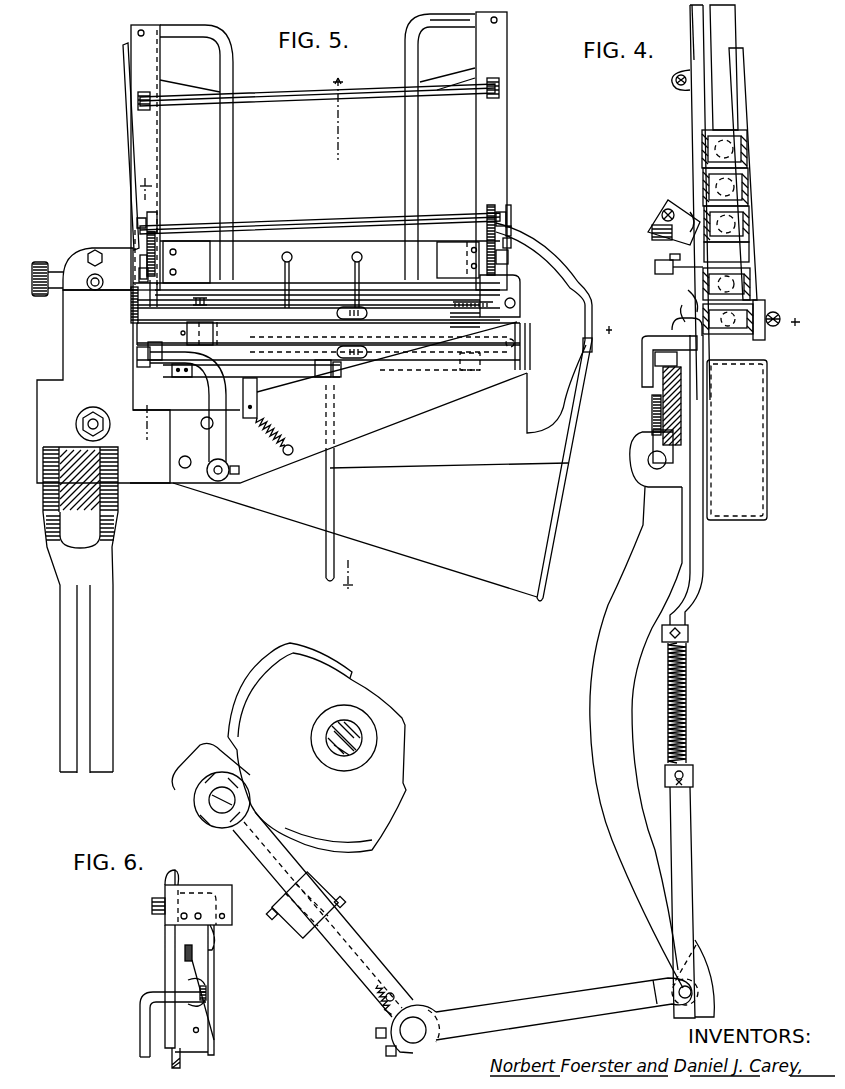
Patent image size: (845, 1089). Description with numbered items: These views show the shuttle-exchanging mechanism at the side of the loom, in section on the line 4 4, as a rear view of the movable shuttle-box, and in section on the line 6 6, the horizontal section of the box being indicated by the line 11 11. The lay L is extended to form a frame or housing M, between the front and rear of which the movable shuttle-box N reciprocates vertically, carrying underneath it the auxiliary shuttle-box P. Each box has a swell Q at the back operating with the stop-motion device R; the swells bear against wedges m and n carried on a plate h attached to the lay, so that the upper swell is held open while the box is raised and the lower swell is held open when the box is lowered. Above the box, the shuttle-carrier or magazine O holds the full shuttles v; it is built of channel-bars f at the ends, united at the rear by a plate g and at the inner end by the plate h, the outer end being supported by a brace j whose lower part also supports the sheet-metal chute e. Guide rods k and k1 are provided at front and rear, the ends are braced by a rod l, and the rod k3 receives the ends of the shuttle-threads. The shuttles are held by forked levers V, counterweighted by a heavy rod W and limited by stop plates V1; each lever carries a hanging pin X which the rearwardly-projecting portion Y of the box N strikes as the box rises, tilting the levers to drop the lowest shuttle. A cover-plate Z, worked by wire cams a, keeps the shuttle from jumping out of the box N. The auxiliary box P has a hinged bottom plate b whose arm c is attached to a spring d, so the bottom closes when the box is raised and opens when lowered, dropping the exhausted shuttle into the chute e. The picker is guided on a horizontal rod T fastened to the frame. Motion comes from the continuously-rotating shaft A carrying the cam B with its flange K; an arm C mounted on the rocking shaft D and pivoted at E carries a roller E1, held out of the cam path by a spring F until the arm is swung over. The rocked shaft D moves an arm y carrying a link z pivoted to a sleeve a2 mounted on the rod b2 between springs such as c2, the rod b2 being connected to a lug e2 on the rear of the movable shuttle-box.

In FIG. 5, the channel-bars f is at (319, 151).
In FIG. 4, the channel-bars f is at (705, 202).
In FIG. 5, the guide rod k is at (405, 131).
In FIG. 4, the guide rod k is at (742, 118).
In FIG. 5, the guide rod k1 is at (410, 70).
In FIG. 4, the guide rod k1 is at (690, 32).
In FIG. 5, the rod k3 is at (128, 76).
In FIG. 5, the rod l is at (318, 103).
In FIG. 4, the rod l is at (672, 82).
In FIG. 5, the shuttle-carrier O is at (330, 193).
In FIG. 4, the shuttle-carrier O is at (723, 67).
In FIG. 5, the section line 4 4 is at (342, 330).
In FIG. 5, the section line 6 6 is at (145, 317).
In FIG. 4, the section line 11 11 is at (714, 329).
In FIG. 5, the heavy rod W is at (368, 224).
In FIG. 4, the heavy rod W is at (672, 210).
In FIG. 5, the plate g is at (316, 262).
In FIG. 5, the wire cams a is at (363, 266).
In FIG. 4, the wire cams a is at (668, 258).
In FIG. 5, the cover-plate Z is at (458, 260).
In FIG. 4, the cover-plate Z is at (663, 278).
In FIG. 5, the swell Q is at (248, 320).
In FIG. 4, the swell Q is at (682, 306).
In FIG. 6, the swell Q is at (200, 980).
In FIG. 5, the forked levers V is at (146, 248).
In FIG. 4, the forked levers V is at (694, 212).
In FIG. 5, the plates V1 is at (550, 214).
In FIG. 5, the pin X is at (503, 262).
In FIG. 5, the brace j is at (544, 416).
In FIG. 5, the rearwardly-projecting portion Y is at (520, 292).
In FIG. 4, the rearwardly-projecting portion Y is at (688, 292).
In FIG. 5, the frame M is at (383, 368).
In FIG. 4, the frame M is at (770, 314).
In FIG. 5, the lug e2 is at (334, 378).
In FIG. 4, the lug e2 is at (656, 362).
In FIG. 5, the sheet-metal chute e is at (349, 485).
In FIG. 4, the sheet-metal chute e is at (664, 710).
In FIG. 5, the plate h is at (92, 275).
In FIG. 4, the plate h is at (652, 236).
In FIG. 6, the plate h is at (202, 895).
In FIG. 5, the wedge m is at (135, 300).
In FIG. 6, the wedge m is at (182, 937).
In FIG. 5, the movable shuttle-box N is at (135, 322).
In FIG. 4, the movable shuttle-box N is at (752, 280).
In FIG. 5, the wedge n is at (146, 352).
In FIG. 6, the wedge n is at (196, 1030).
In FIG. 5, the auxiliary shuttle-box P is at (130, 382).
In FIG. 4, the auxiliary shuttle-box P is at (742, 362).
In FIG. 5, the stop-motion device R is at (211, 387).
In FIG. 4, the stop-motion device R is at (643, 340).
In FIG. 6, the stop-motion device R is at (138, 1034).
In FIG. 5, the arm c is at (258, 375).
In FIG. 4, the arm c is at (655, 398).
In FIG. 5, the bottom plate b is at (272, 421).
In FIG. 4, the bottom plate b is at (694, 366).
In FIG. 5, the spring d is at (282, 432).
In FIG. 4, the spring d is at (653, 428).
In FIG. 4, the shuttles v is at (740, 192).
In FIG. 4, the horizontal rod T is at (775, 328).
In FIG. 4, the lay L is at (676, 324).
In FIG. 6, the lay L is at (170, 1060).
In FIG. 4, the rod b2 is at (685, 612).
In FIG. 4, the spring c2 is at (688, 690).
In FIG. 4, the sleeve a2 is at (694, 772).
In FIG. 4, the link z is at (692, 840).
In FIG. 4, the arm y is at (540, 1006).
In FIG. 4, the flange K is at (232, 714).
In FIG. 4, the cam B is at (317, 766).
In FIG. 4, the shaft A is at (362, 738).
In FIG. 4, the roller E1 is at (236, 798).
In FIG. 4, the arm C is at (258, 860).
In FIG. 4, the pivot E is at (340, 900).
In FIG. 4, the spring F is at (378, 1010).
In FIG. 4, the rocking shaft D is at (420, 1018).